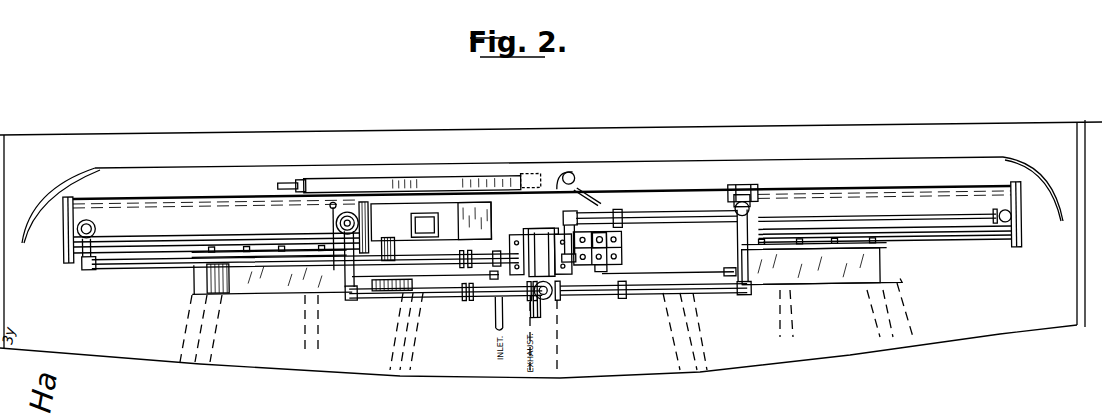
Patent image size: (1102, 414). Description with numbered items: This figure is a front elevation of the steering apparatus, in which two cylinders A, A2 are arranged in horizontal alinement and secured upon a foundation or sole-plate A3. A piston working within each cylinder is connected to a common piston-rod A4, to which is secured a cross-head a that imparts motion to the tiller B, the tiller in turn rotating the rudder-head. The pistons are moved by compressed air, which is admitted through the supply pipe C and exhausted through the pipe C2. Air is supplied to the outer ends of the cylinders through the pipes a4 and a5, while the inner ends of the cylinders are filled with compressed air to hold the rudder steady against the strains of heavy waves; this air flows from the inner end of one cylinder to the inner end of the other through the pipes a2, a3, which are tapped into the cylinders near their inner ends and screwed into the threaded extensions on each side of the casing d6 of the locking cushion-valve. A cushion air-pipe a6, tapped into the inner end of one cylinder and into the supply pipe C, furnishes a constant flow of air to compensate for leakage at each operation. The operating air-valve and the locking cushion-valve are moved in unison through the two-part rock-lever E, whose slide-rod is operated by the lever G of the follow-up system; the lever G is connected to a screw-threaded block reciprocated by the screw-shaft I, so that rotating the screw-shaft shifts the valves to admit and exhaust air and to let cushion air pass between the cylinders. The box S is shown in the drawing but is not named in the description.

The cylinder A is at (167, 202).
The cylinder A2 is at (920, 210).
The foundation or sole-plate A3 is at (878, 274).
The piston-rod A4 is at (623, 221).
The slide box S is at (352, 192).
The cross-head a is at (463, 213).
The tiller B is at (413, 233).
The pipe a2 is at (370, 302).
The pipe a3 is at (647, 299).
The pipe a4 is at (128, 270).
The pipe a5 is at (968, 229).
The cushion air-pipe a6 is at (442, 284).
The lever G is at (705, 283).
The two-part rock-lever E is at (563, 300).
The screw-shaft I is at (606, 272).
The casing d6 is at (615, 257).
The pipe C is at (493, 319).
The pipe C2 is at (537, 326).